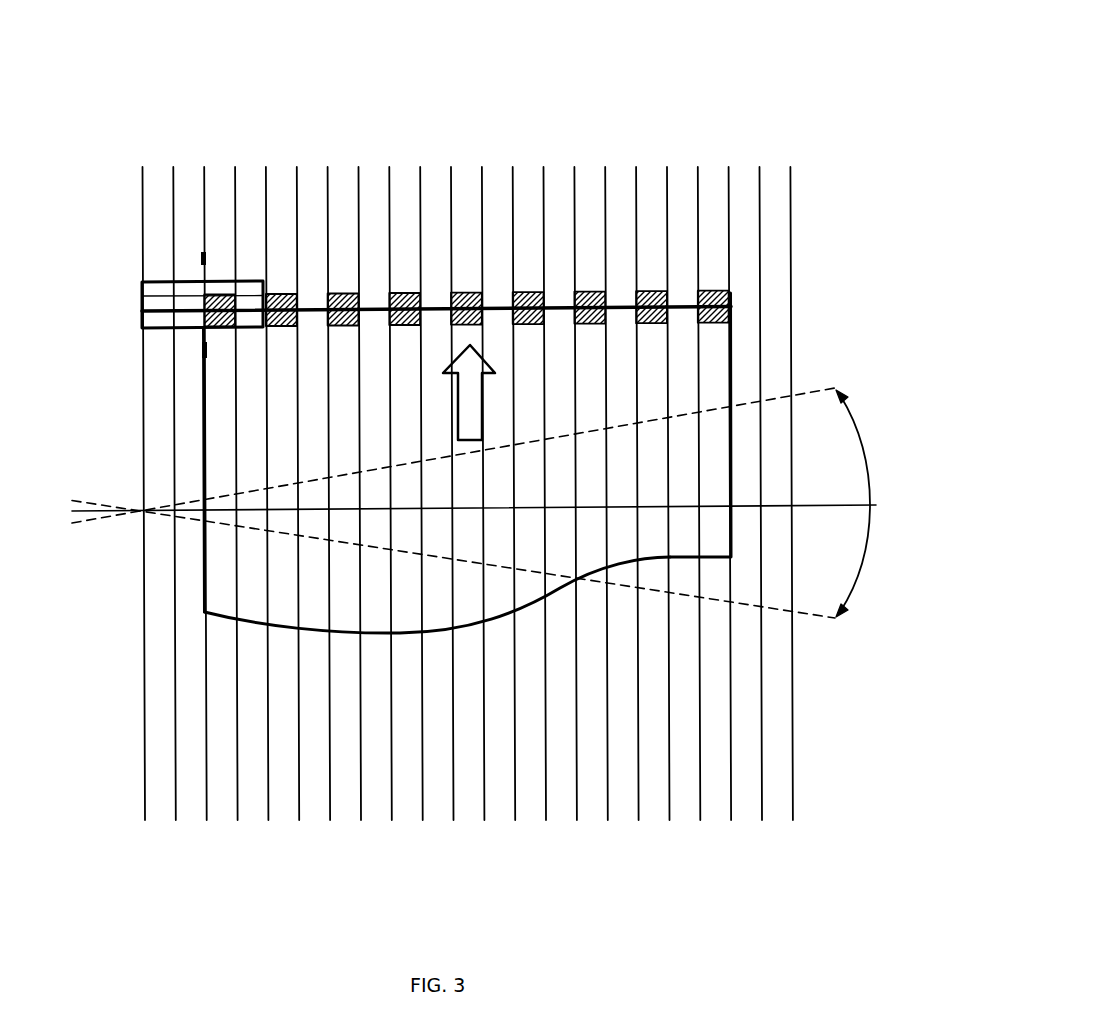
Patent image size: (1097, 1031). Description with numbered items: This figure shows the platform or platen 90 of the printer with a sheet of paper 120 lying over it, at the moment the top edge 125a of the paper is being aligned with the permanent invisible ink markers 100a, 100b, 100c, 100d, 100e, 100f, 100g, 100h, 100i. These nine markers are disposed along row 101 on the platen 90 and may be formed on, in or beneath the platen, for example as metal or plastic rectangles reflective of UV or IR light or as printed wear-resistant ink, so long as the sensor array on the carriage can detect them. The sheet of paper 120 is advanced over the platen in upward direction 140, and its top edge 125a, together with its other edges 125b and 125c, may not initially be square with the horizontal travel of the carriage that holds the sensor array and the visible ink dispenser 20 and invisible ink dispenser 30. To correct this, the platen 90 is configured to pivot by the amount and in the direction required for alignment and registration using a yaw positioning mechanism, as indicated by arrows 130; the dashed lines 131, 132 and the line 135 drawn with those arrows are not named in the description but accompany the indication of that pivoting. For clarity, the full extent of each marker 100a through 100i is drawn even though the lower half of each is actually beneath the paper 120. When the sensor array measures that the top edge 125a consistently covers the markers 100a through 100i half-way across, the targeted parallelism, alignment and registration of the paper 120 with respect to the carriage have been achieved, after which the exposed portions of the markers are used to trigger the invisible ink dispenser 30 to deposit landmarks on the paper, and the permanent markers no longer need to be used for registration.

The platform or platen 90 is at (808, 116).
The row 101 is at (140, 305).
The top edge of sheet of paper 125a is at (612, 292).
The left wall 125b is at (203, 426).
The right wall 125c is at (730, 477).
The sheet of paper 120 is at (222, 596).
The visible ink dispenser 20 is at (201, 258).
The invisible ink dispenser 30 is at (207, 346).
The permanent invisible ink marker 100a is at (218, 292).
The permanent invisible ink marker 100b is at (280, 292).
The permanent invisible ink marker 100c is at (342, 291).
The permanent invisible ink marker 100d is at (404, 291).
The permanent invisible ink marker 100e is at (466, 291).
The permanent invisible ink marker 100f is at (528, 290).
The permanent invisible ink marker 100g is at (590, 290).
The permanent invisible ink marker 100h is at (652, 289).
The permanent invisible ink marker 100i is at (714, 289).
The upward direction 140 is at (470, 397).
The arrows 130 is at (863, 456).
The upper boundary ray 131 is at (817, 391).
The lower boundary ray 132 is at (810, 620).
The central axis 135 is at (880, 505).